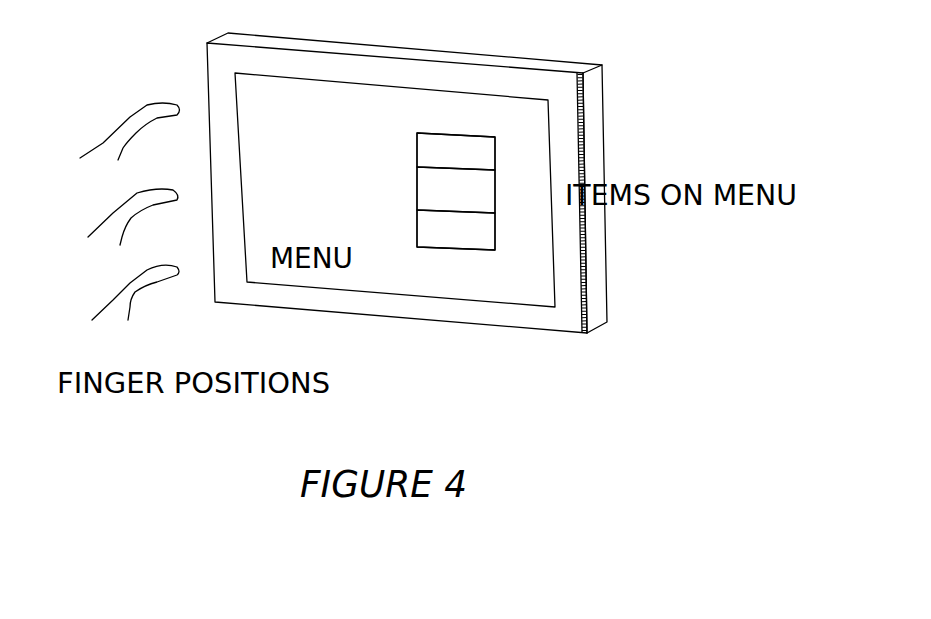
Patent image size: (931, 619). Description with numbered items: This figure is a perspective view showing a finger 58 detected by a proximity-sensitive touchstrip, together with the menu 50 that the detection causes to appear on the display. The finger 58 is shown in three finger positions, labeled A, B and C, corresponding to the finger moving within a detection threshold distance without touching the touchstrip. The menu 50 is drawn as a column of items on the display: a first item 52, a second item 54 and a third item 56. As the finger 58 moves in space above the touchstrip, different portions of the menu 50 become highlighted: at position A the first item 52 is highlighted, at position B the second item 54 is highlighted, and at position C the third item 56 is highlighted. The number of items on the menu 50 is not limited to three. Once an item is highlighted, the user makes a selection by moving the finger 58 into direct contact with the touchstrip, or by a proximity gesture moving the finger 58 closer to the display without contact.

The menu 50 is at (412, 190).
The first item 52 is at (488, 154).
The second item 54 is at (487, 196).
The third item 56 is at (487, 238).
The finger 58 is at (150, 130).